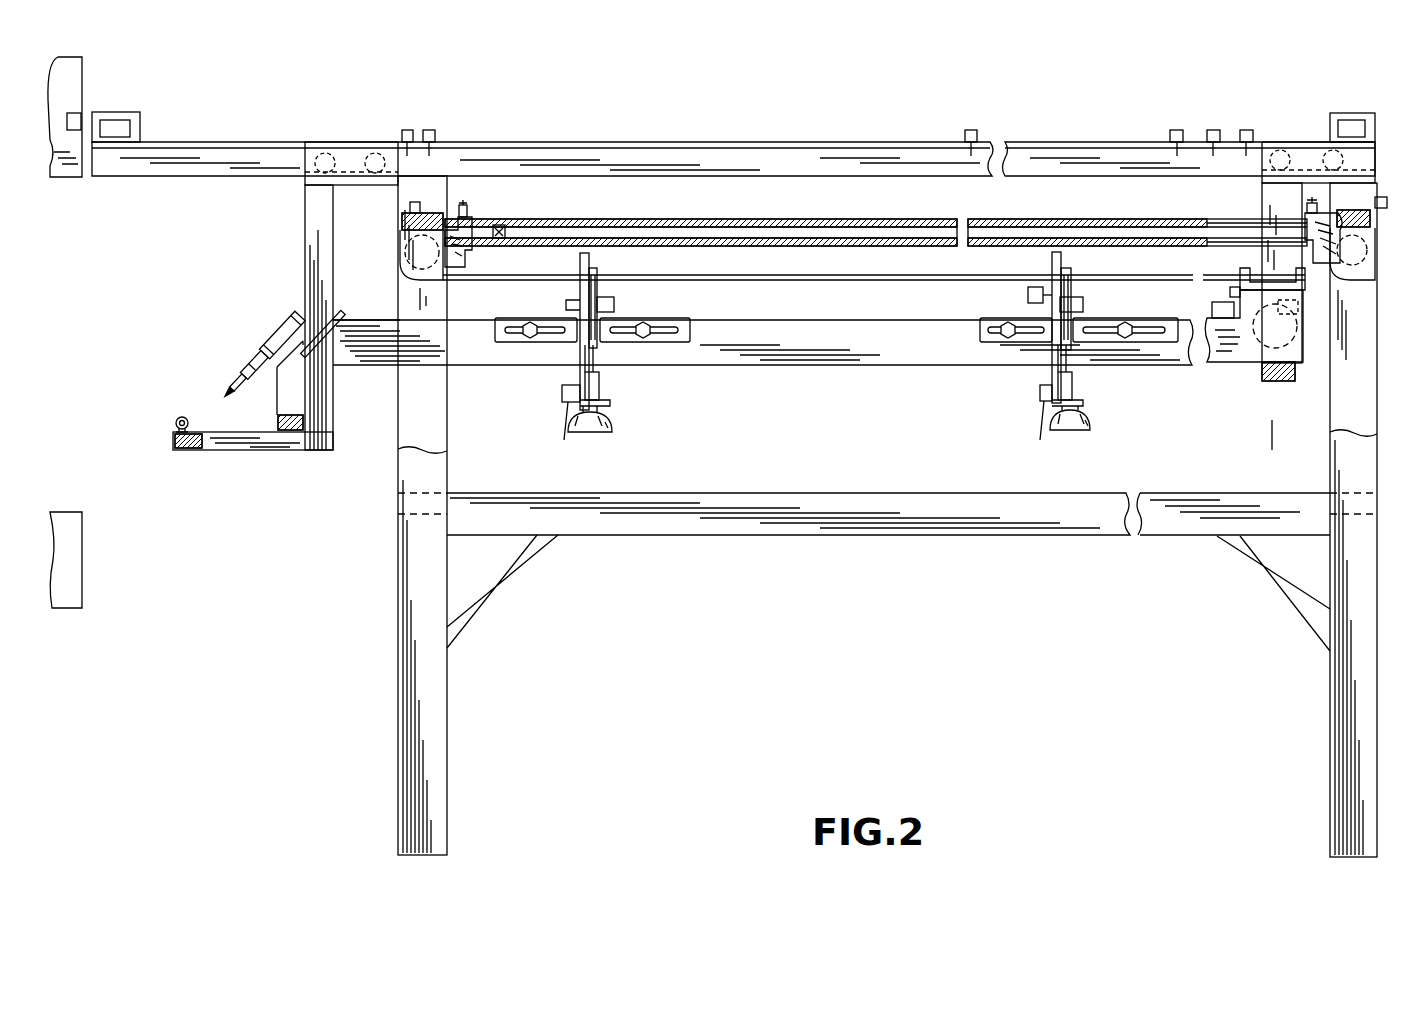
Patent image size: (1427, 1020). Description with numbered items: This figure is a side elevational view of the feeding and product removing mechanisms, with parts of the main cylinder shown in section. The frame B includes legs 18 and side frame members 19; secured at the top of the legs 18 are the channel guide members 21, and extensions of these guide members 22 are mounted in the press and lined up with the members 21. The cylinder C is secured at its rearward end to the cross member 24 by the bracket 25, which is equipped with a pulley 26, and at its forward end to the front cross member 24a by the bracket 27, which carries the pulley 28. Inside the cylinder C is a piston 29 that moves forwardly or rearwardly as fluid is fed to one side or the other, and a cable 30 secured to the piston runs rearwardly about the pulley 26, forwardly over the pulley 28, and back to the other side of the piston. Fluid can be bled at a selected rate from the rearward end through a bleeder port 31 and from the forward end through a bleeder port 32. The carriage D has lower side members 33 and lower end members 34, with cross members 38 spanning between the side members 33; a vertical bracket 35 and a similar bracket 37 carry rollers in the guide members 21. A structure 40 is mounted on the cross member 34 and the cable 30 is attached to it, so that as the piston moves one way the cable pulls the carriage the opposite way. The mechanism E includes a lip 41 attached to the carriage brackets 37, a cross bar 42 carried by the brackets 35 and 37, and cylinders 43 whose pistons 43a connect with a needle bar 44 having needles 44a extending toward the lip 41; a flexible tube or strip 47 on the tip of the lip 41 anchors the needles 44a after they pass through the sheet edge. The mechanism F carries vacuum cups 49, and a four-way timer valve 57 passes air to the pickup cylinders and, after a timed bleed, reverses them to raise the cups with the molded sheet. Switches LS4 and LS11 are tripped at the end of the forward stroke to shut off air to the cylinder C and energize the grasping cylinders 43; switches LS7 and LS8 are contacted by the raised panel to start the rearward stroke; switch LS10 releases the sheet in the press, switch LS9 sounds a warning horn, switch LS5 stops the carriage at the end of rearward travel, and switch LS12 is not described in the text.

The legs 18 is at (447, 733).
The side frame members 19 is at (1000, 537).
The channel guide members 21 is at (626, 158).
The extensions of the guide members 22 is at (68, 178).
The cross structural frame member 24 is at (1353, 209).
The front cross member 24a is at (401, 220).
The bracket 25 is at (1345, 240).
The pulley 26 is at (1352, 265).
The bracket 27 is at (455, 254).
The pulley 28 is at (425, 280).
The piston 29 is at (504, 225).
The cable 30 is at (485, 281).
The bleeder port 31 is at (1305, 206).
The bleeder port 32 is at (468, 207).
The lower side members 33 is at (800, 367).
The lower end members 34 is at (1280, 382).
The vertical bracket 35 is at (1296, 272).
The bracket 37 is at (304, 240).
The cross members 38 is at (1033, 312).
The structure 40 is at (1240, 300).
The lip 41 is at (255, 452).
The cross bar 42 is at (290, 366).
The cylinders 43 is at (285, 327).
The pistons 43a is at (252, 365).
The needle bar 44 is at (232, 389).
The needles 44a is at (220, 400).
The tube or strip 47 is at (175, 427).
The vacuum cups 49 is at (600, 432).
The 4-way timer valve 57 is at (1027, 295).
The frame B is at (718, 536).
The cylinder C is at (705, 218).
The carriage D is at (864, 366).
The mechanism for grasping the sheet edge E is at (270, 321).
The mechanism for picking up the molded sheet F is at (599, 393).
The switch LS4 is at (406, 128).
The switch LS5 is at (1216, 128).
The switch LS7 is at (1038, 392).
The switch LS8 is at (560, 394).
The switch LS9 is at (1177, 128).
The switch LS10 is at (975, 128).
The switch LS11 is at (430, 128).
The limit switch LS12 is at (1250, 128).